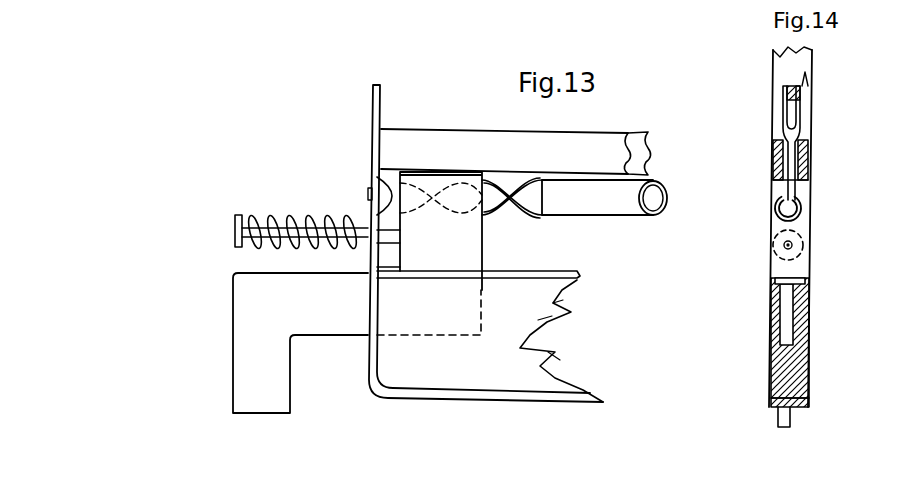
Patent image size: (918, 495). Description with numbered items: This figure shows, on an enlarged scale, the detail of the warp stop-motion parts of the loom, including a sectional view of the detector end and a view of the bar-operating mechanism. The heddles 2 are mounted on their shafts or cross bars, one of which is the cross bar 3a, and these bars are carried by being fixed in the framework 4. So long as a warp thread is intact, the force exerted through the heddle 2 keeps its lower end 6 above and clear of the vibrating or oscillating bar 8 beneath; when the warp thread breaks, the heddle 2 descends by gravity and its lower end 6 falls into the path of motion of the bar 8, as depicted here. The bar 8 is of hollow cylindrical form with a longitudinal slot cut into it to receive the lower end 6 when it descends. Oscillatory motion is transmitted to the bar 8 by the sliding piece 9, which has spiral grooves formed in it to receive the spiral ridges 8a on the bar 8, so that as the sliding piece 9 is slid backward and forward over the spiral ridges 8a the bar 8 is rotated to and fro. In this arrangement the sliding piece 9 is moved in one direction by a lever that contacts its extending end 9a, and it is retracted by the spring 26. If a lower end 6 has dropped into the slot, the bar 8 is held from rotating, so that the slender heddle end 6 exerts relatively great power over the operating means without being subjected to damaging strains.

In FIG. 14, the heddle 2 is at (782, 112).
In FIG. 14, the cross bar 3a is at (800, 95).
In FIG. 13, the framework 4 is at (569, 312).
In FIG. 14, the framework 4 is at (773, 323).
In FIG. 14, the lower end of heddle 6 is at (789, 187).
In FIG. 13, the vibrating bar 8 is at (590, 214).
In FIG. 14, the vibrating bar 8 is at (778, 215).
In FIG. 13, the spiral ridges 8a is at (502, 210).
In FIG. 13, the sliding piece 9 is at (441, 231).
In FIG. 14, the sliding piece 9 is at (785, 268).
In FIG. 13, the extending end of sliding piece 9a is at (357, 343).
In FIG. 13, the spring 26 is at (291, 223).